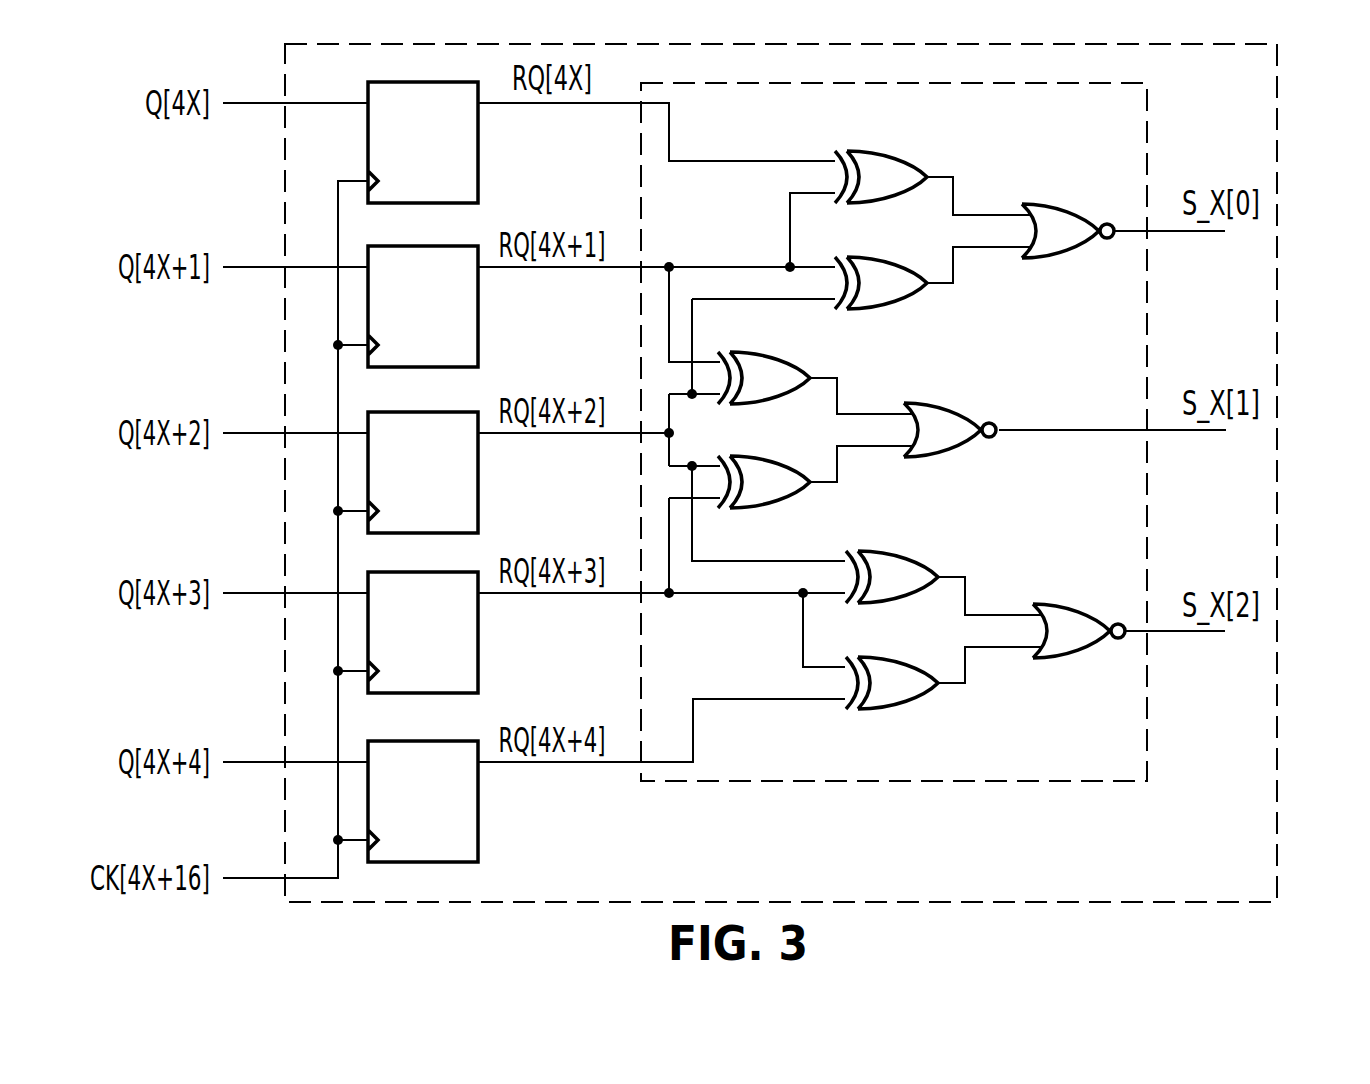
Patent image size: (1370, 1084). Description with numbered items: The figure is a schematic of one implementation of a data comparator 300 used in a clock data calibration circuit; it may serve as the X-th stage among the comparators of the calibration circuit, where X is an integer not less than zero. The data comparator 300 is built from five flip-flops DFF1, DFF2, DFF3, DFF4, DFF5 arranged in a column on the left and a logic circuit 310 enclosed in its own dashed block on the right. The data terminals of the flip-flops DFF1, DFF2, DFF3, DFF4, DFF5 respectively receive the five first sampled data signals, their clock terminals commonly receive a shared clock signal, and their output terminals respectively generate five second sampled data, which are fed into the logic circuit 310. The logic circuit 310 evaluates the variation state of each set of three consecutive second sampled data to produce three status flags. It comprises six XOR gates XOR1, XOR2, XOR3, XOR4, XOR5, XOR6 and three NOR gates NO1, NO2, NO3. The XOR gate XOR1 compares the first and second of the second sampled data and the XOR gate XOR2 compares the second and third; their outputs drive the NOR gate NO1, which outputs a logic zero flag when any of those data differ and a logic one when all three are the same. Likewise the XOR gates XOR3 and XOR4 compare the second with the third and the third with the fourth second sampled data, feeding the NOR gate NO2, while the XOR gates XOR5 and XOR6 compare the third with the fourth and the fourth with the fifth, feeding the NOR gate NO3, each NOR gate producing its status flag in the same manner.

The data comparator 300 is at (1278, 96).
The logic circuit 310 is at (1148, 131).
The flip-flop DFF1 is at (478, 181).
The flip-flop DFF2 is at (478, 345).
The flip-flop DFF3 is at (478, 511).
The flip-flop DFF4 is at (478, 671).
The flip-flop DFF5 is at (478, 840).
The XOR gate XOR1 is at (898, 153).
The XOR gate XOR2 is at (898, 306).
The XOR gate XOR3 is at (782, 354).
The XOR gate XOR4 is at (782, 507).
The XOR gate XOR5 is at (910, 553).
The XOR gate XOR6 is at (910, 707).
The NOR gate NO1 is at (1076, 205).
The NOR gate NO2 is at (961, 404).
The NOR gate NO3 is at (1092, 605).